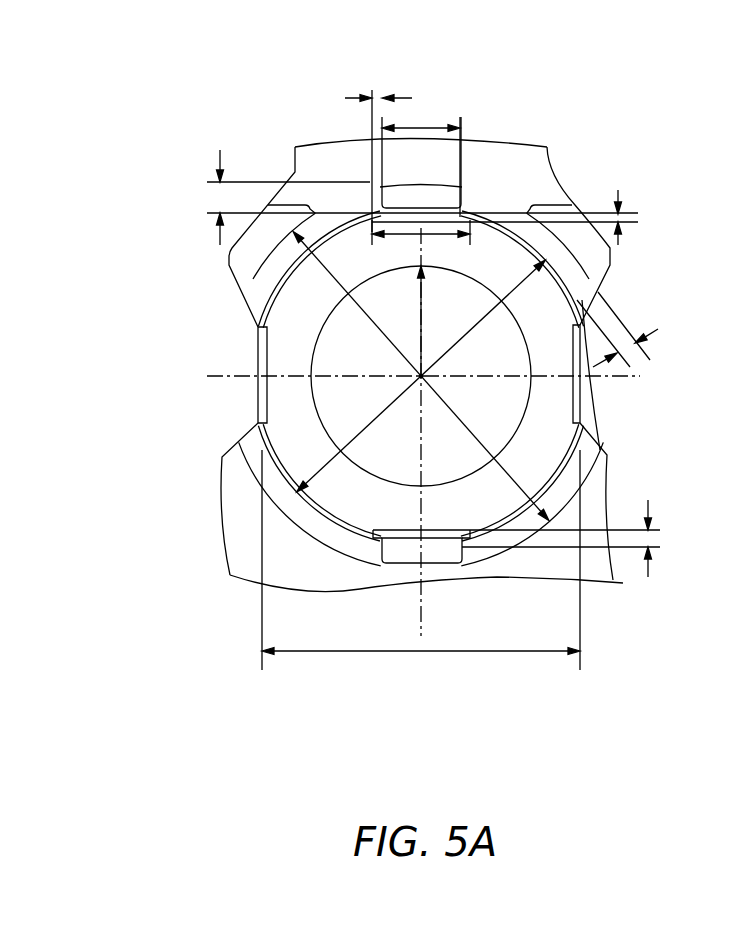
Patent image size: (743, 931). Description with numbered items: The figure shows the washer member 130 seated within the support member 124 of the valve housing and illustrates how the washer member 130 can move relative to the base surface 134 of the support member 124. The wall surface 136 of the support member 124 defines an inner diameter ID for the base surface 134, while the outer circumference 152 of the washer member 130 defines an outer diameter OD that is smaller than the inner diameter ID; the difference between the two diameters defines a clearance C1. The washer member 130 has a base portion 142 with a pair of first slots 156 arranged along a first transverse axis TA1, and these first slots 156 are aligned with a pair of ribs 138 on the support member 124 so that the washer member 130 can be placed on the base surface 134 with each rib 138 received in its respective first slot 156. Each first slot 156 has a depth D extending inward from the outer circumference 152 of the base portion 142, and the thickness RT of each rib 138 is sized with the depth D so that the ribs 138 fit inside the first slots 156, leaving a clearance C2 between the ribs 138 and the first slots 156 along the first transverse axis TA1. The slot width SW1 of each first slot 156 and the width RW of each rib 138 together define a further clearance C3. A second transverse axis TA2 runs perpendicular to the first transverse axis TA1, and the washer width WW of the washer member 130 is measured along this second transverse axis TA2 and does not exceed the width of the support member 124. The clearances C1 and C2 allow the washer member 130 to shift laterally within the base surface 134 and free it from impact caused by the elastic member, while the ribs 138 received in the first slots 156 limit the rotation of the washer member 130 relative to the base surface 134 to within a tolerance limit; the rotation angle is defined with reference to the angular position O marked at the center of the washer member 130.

The support member 124 is at (296, 160).
The washer member 130 is at (593, 433).
The base surface 134 is at (495, 200).
The wall surface 136 is at (517, 203).
The ribs 138 is at (352, 530).
The base portion 142 is at (258, 343).
The outer circumference 152 is at (570, 252).
The first slots 156 is at (450, 212).
The thickness RT is at (220, 148).
The clearance C3 is at (350, 97).
The width RW is at (418, 127).
The clearance C2 is at (622, 192).
The slot width SW1 is at (443, 237).
The angular position O is at (420, 309).
The outer diameter OD is at (470, 333).
The inner diameter ID is at (362, 317).
The clearance C1 is at (653, 332).
The depth D is at (650, 503).
The first transverse axis TA1 is at (423, 608).
The second transverse axis TA2 is at (230, 375).
The washer width WW is at (397, 652).